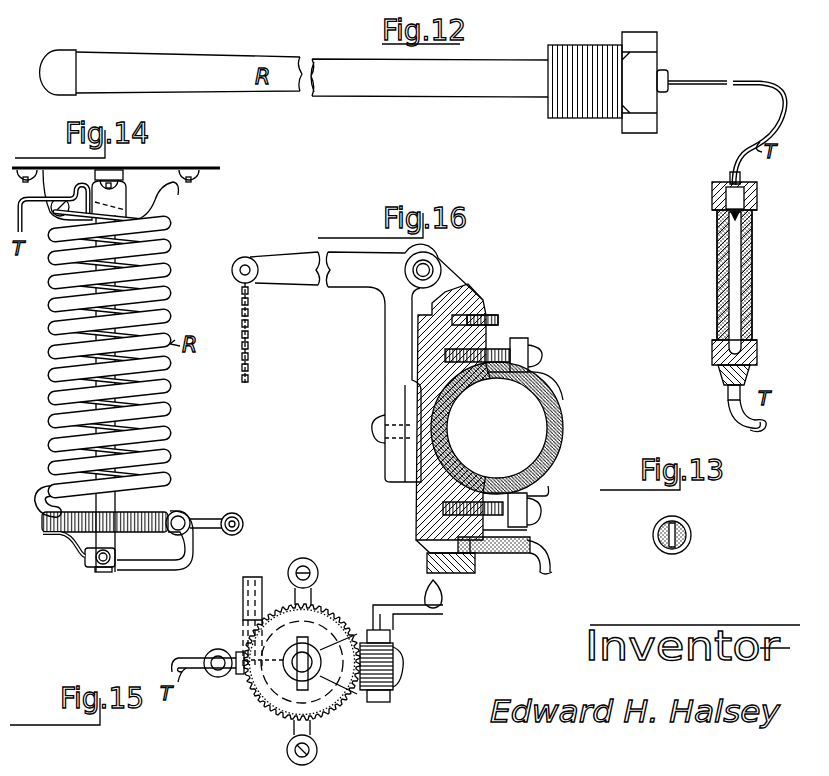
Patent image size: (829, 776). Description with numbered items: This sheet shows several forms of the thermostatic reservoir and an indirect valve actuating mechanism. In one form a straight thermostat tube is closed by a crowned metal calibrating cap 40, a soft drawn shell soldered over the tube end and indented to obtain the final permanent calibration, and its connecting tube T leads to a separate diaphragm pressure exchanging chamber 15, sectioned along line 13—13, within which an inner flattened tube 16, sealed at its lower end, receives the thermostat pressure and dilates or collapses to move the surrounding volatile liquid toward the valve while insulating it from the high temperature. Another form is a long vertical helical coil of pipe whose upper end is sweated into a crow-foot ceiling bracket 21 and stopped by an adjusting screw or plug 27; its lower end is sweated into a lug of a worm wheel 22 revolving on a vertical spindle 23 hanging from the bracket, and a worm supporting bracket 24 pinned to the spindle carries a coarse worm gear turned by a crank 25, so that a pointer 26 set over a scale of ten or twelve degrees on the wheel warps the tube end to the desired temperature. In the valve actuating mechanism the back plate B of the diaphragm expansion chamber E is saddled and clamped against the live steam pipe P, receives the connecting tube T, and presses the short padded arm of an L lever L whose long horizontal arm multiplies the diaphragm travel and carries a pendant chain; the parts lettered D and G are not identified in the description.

In FIG. 12, the crowned metal calibrating cap 40 is at (60, 62).
In FIG. 12, the section line 13— 13 is at (720, 251).
In FIG. 12, the diaphragm pressure exchanging chamber 15 is at (712, 290).
In FIG. 13, the diaphragm pressure exchanging chamber 15 is at (672, 541).
In FIG. 12, the inner flattened tube 16 is at (735, 312).
In FIG. 13, the inner flattened tube 16 is at (690, 522).
In FIG. 14, the crow-foot ceiling bracket 21 is at (176, 190).
In FIG. 14, the adjusting screw or plug 27 is at (57, 214).
In FIG. 15, the adjusting screw or plug 27 is at (253, 576).
In FIG. 14, the worm wheel 22 is at (156, 517).
In FIG. 15, the worm wheel 22 is at (326, 618).
In FIG. 14, the crank 25 is at (256, 514).
In FIG. 15, the crank 25 is at (426, 614).
In FIG. 14, the worm supporting bracket 24 is at (183, 549).
In FIG. 15, the worm supporting bracket 24 is at (368, 690).
In FIG. 14, the vertical spindle 23 is at (92, 580).
In FIG. 15, the vertical spindle 23 is at (298, 670).
In FIG. 14, the pointer 26 is at (60, 546).
In FIG. 15, the pointer 26 is at (262, 668).
In FIG. 16, the L lever L is at (392, 381).
In FIG. 16, the live steam pipe P is at (497, 428).
In FIG. 16, the bracket body D is at (425, 488).
In FIG. 16, the diaphragm expansion chamber E is at (420, 512).
In FIG. 16, the back plate B is at (462, 575).
In FIG. 16, the gland G is at (488, 555).
In FIG. 16, the connecting tube T is at (545, 562).